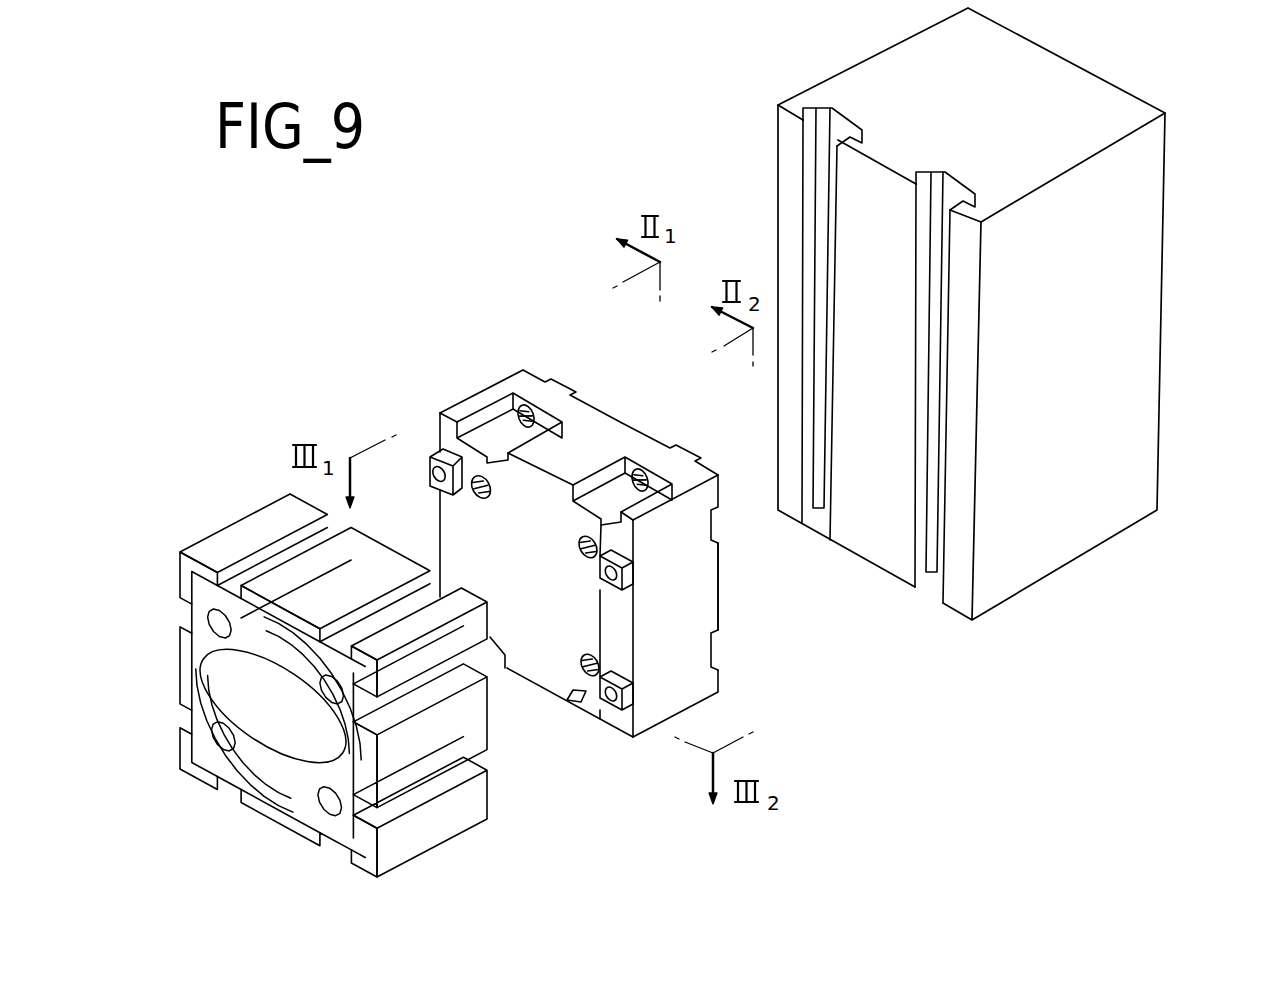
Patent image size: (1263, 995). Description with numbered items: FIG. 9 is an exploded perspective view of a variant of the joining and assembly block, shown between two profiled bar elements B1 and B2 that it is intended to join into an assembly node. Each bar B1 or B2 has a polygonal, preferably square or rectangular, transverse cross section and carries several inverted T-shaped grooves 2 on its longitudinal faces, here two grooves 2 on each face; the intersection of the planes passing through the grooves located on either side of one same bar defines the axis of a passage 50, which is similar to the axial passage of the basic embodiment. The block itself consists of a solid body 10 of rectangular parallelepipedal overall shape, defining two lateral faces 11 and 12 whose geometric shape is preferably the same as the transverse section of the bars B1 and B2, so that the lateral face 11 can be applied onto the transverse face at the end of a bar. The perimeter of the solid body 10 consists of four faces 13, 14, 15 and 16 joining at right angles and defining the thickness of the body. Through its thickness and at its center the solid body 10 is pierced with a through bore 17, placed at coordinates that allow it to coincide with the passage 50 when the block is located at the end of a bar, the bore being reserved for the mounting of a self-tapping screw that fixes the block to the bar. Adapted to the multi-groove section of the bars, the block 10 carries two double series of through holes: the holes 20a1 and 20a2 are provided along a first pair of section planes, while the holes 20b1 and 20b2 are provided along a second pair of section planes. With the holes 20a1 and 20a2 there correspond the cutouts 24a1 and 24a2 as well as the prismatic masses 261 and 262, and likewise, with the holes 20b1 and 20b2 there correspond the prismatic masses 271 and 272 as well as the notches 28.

The inverted T-shaped groove 2 is at (823, 152).
The solid body 10 is at (583, 534).
The lateral face 11 is at (725, 583).
The lateral face 12 is at (613, 616).
The face 13 is at (730, 606).
The face 14 is at (574, 405).
The face 15 is at (570, 581).
The face 16 is at (548, 701).
The through bore 17 is at (580, 543).
The through hole 20a1 is at (527, 404).
The through hole 20a2 is at (647, 478).
The through hole 20b1 is at (623, 578).
The through hole 20b2 is at (602, 733).
The cutout 24a1 is at (464, 367).
The cutout 24a2 is at (677, 485).
The prismatic mass 261 is at (578, 389).
The prismatic mass 262 is at (688, 446).
The prismatic mass 271 is at (435, 453).
The prismatic mass 272 is at (637, 728).
The notch 28 is at (722, 646).
The passage 50 is at (227, 628).
The profiled bar element B1 is at (322, 704).
The profiled bar element B2 is at (1168, 342).